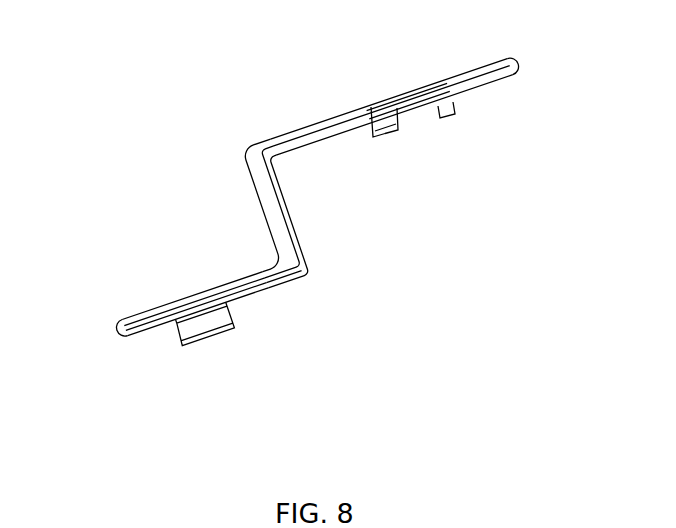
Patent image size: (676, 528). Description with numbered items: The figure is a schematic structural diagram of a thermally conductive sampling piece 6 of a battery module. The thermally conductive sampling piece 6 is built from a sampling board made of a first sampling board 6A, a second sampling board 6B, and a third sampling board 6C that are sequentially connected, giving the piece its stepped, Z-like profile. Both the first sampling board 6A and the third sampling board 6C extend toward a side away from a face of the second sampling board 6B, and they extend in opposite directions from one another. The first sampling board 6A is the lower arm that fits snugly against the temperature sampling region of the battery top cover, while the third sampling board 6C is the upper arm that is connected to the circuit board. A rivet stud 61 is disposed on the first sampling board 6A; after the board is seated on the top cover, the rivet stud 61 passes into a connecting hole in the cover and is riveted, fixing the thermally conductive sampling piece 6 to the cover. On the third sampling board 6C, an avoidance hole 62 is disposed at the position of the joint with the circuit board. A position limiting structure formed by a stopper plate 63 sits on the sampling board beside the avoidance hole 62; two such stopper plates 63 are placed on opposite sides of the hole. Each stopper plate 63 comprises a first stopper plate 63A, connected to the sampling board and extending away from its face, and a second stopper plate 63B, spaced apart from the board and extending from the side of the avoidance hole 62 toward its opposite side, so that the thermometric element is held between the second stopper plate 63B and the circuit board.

The thermally conductive sampling piece 6 is at (313, 221).
The first sampling board 6A is at (236, 352).
The second sampling board 6B is at (270, 217).
The third sampling board 6C is at (420, 131).
The rivet stud 61 is at (203, 348).
The avoidance hole 62 is at (422, 107).
The stopper plate 63 is at (455, 107).
The first stopper plate 63A is at (365, 112).
The second stopper plate 63B is at (392, 127).